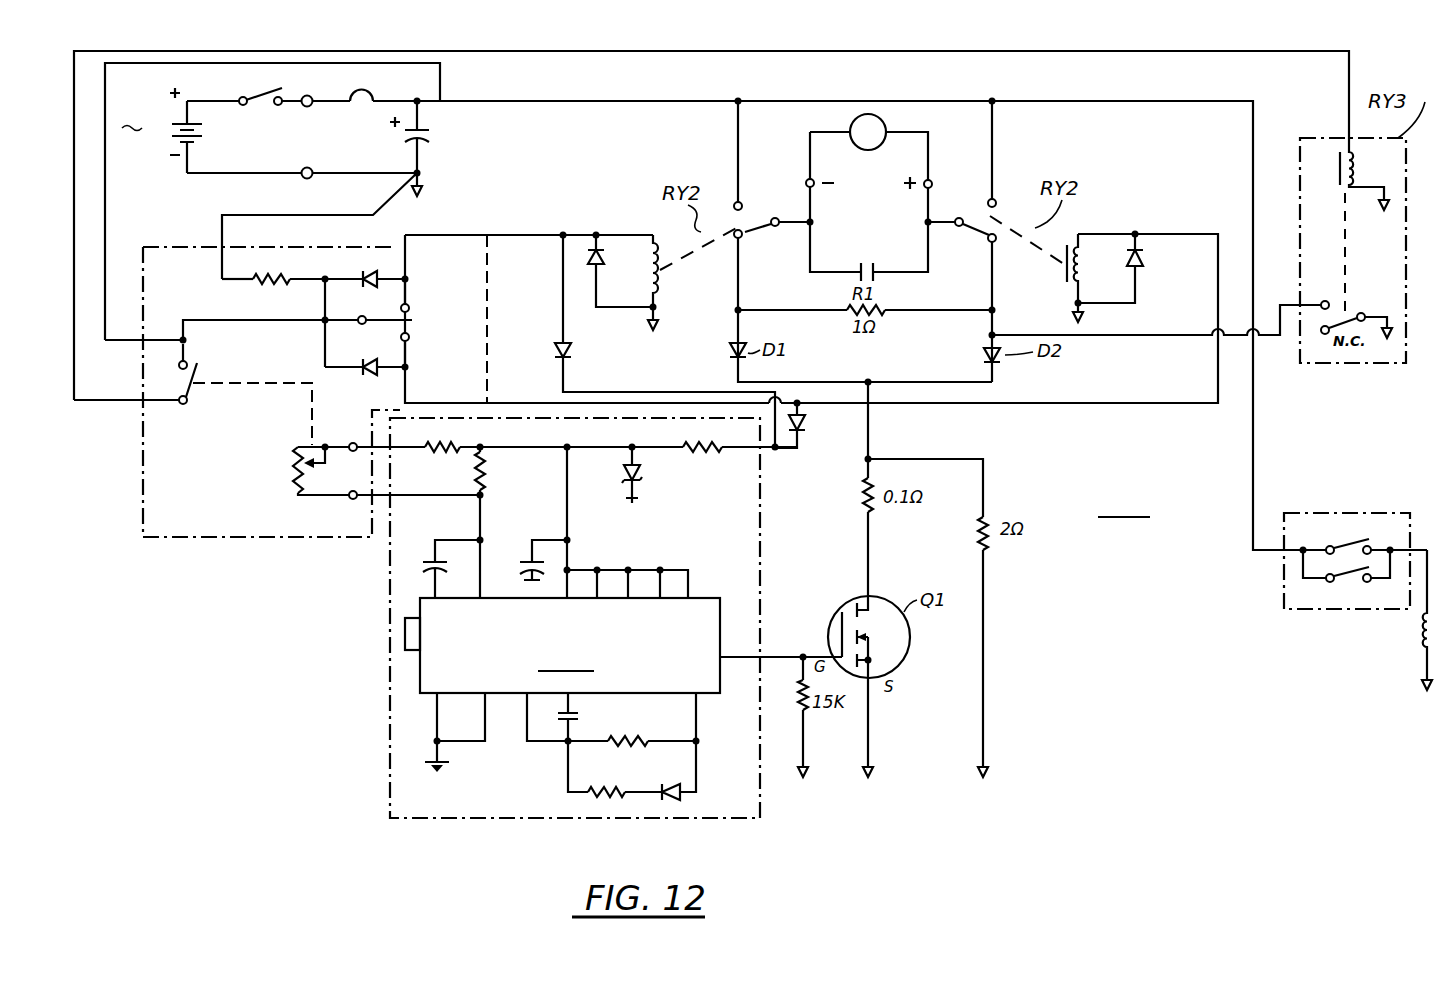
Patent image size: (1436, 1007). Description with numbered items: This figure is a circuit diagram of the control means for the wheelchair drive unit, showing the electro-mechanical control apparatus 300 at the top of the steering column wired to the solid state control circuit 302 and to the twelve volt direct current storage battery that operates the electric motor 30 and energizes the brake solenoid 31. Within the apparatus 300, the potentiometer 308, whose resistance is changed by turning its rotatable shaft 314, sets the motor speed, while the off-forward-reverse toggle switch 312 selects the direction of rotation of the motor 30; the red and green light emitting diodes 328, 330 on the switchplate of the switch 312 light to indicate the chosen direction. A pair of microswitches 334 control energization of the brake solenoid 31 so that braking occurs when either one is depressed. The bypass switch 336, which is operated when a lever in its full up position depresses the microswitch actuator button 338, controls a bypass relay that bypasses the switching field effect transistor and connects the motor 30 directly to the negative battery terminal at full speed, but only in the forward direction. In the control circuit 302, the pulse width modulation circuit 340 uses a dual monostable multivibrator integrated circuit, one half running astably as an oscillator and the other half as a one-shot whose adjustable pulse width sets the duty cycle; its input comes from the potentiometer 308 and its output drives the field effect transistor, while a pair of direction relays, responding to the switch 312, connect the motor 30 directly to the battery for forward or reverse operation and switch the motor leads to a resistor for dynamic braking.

The electric motor 30 is at (888, 122).
The brake solenoid 31 is at (1420, 647).
The electro-mechanical control apparatus 300 is at (143, 537).
The solid state control circuit 302 is at (711, 300).
The potentiometer 308 is at (296, 476).
The off-forward-reverse toggle switch 312 is at (408, 308).
The rotatable shaft 314 is at (322, 468).
The light emitting diode (red) 328 is at (364, 274).
The light emitting diode (green) 330 is at (344, 370).
The microswitches 334 is at (1345, 540).
The bypass switch 336 is at (245, 372).
The microswitch actuator button 338 is at (240, 386).
The pulse width modulation circuit 340 is at (390, 769).